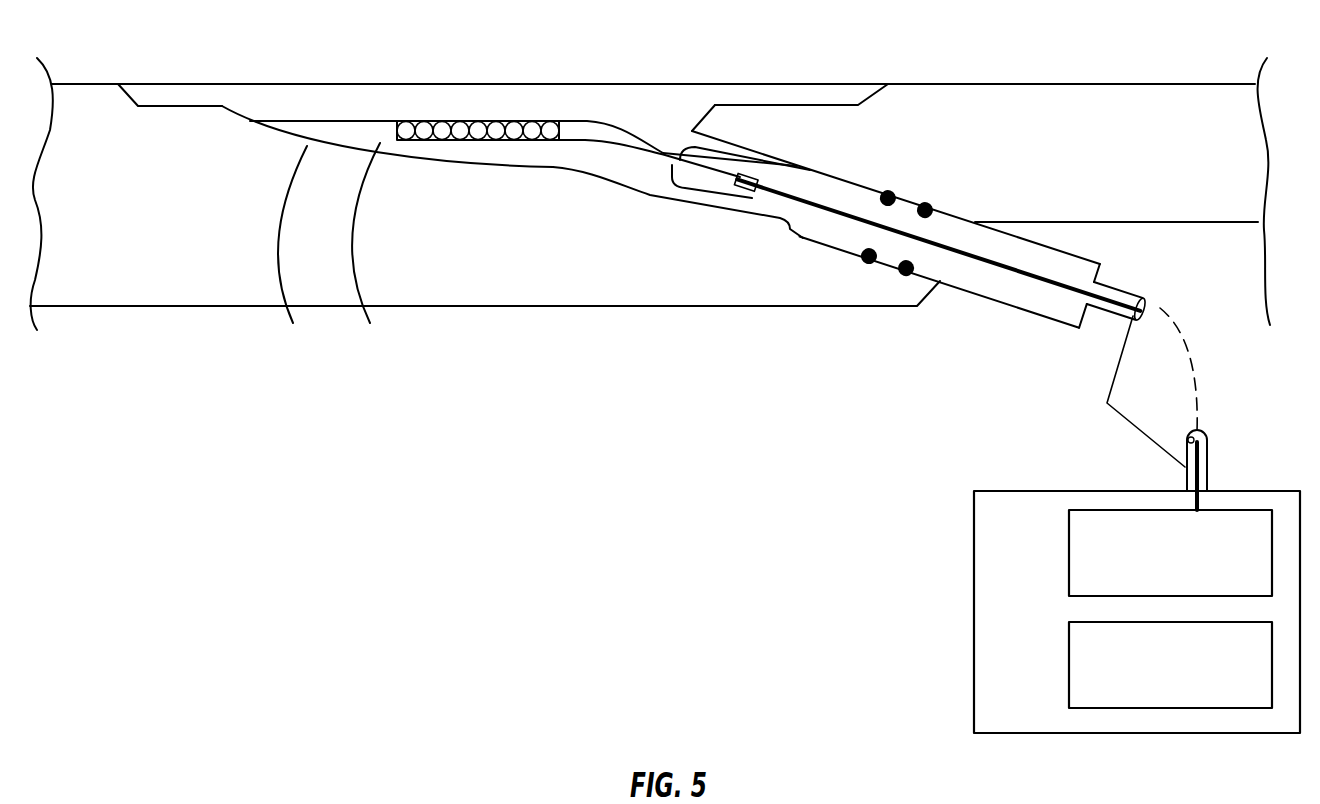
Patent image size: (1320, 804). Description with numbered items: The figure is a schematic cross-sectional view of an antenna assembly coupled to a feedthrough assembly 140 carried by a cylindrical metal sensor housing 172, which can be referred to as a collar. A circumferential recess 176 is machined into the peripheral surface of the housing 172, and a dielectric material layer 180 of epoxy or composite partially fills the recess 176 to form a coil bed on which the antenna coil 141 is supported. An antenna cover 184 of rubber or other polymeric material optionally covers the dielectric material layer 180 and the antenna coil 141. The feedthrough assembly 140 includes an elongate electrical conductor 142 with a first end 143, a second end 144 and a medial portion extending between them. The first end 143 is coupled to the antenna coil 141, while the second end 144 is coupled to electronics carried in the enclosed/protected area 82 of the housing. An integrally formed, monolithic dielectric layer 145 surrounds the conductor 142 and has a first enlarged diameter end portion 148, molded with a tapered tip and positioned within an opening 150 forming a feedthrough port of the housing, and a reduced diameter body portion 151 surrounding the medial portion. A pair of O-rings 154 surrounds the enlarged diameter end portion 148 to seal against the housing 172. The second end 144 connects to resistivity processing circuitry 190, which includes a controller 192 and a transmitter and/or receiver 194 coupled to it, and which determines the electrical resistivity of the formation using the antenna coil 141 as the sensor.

The enclosed/protected area 82 is at (720, 487).
The feedthrough assembly 140 is at (965, 201).
The antenna coil 141 is at (462, 118).
The elongate electrical conductor 142 is at (1068, 283).
The first end 143 is at (788, 190).
The second end 144 is at (1200, 503).
The dielectric layer 145 is at (992, 230).
The first enlarged diameter end portion 148 is at (1033, 258).
The opening 150 is at (780, 238).
The reduced diameter body portion 151 is at (1107, 403).
The first O-ring 154 is at (900, 196).
The sensor housing 172 is at (1122, 102).
The circumferential recess 176 is at (387, 231).
The dielectric material layer 180 is at (380, 250).
The antenna cover 184 is at (651, 103).
The resistivity processing circuitry 190 is at (1008, 490).
The controller 192 is at (1087, 642).
The transmitter and/or receiver 194 is at (1087, 530).